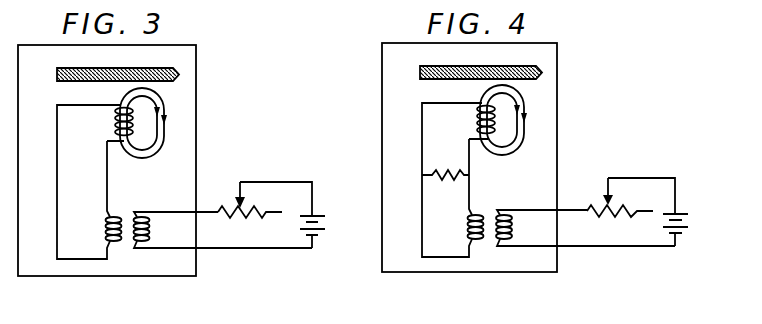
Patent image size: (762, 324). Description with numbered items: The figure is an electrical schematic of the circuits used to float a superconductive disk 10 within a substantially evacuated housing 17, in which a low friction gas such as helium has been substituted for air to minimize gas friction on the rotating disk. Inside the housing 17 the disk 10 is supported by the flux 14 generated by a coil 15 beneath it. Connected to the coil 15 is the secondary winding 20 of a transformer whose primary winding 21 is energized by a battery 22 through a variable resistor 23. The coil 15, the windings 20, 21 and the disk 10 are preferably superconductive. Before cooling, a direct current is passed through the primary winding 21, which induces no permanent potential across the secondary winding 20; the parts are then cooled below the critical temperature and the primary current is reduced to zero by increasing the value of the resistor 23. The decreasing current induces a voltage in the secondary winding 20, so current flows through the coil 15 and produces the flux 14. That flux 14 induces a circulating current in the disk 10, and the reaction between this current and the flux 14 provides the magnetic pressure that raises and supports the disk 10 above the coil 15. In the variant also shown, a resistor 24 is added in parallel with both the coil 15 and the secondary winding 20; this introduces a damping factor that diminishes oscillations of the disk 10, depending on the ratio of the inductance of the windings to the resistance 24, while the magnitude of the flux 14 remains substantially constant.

In FIG. 3, the disk 10 is at (178, 73).
In FIG. 4, the disk 10 is at (420, 72).
In FIG. 3, the flux 14 is at (162, 95).
In FIG. 4, the flux 14 is at (524, 92).
In FIG. 3, the coil 15 is at (133, 146).
In FIG. 4, the coil 15 is at (491, 148).
In FIG. 3, the housing 17 is at (196, 118).
In FIG. 4, the housing 17 is at (557, 61).
In FIG. 3, the secondary winding 20 is at (105, 240).
In FIG. 4, the secondary winding 20 is at (466, 246).
In FIG. 3, the primary winding 21 is at (150, 239).
In FIG. 4, the primary winding 21 is at (510, 240).
In FIG. 3, the battery 22 is at (327, 229).
In FIG. 4, the battery 22 is at (692, 221).
In FIG. 3, the variable resistor 23 is at (248, 203).
In FIG. 4, the variable resistor 23 is at (594, 203).
In FIG. 4, the resistor 24 is at (447, 172).